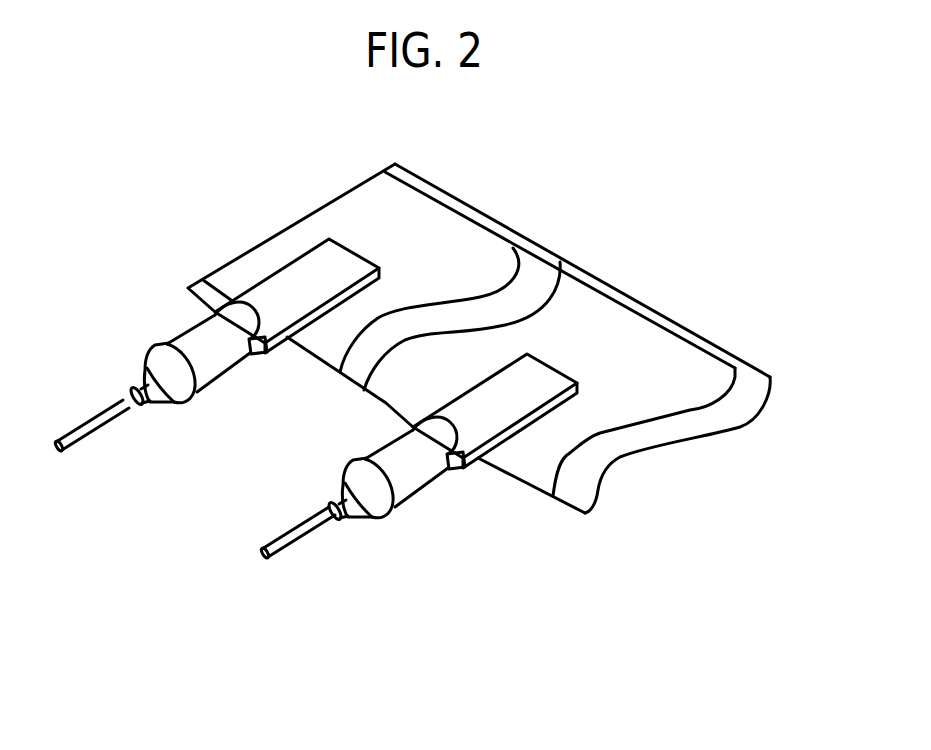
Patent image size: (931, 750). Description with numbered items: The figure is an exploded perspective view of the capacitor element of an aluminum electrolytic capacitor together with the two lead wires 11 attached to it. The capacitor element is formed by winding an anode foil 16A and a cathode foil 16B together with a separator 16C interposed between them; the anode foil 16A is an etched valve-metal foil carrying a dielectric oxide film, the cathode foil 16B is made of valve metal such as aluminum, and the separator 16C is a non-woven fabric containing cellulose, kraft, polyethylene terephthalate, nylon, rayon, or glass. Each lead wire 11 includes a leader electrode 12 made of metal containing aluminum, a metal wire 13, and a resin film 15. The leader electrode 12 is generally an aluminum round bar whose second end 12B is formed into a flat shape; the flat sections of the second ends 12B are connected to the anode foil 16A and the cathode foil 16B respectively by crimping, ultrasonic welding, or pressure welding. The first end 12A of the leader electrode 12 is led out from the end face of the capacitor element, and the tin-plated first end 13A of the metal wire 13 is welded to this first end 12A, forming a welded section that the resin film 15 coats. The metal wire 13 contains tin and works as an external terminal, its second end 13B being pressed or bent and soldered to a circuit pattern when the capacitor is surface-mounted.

The lead wire 11 is at (563, 668).
The leader electrode 12 is at (598, 617).
The first end of leader electrode 12A is at (430, 463).
The second end of leader electrode 12B is at (492, 422).
The metal wire 13 is at (388, 617).
The first end of metal wire 13A is at (328, 522).
The second end of metal wire 13B is at (277, 547).
The resin film 15 is at (383, 515).
The anode foil 16A is at (627, 330).
The cathode foil 16B is at (453, 238).
The separator 16C is at (532, 272).